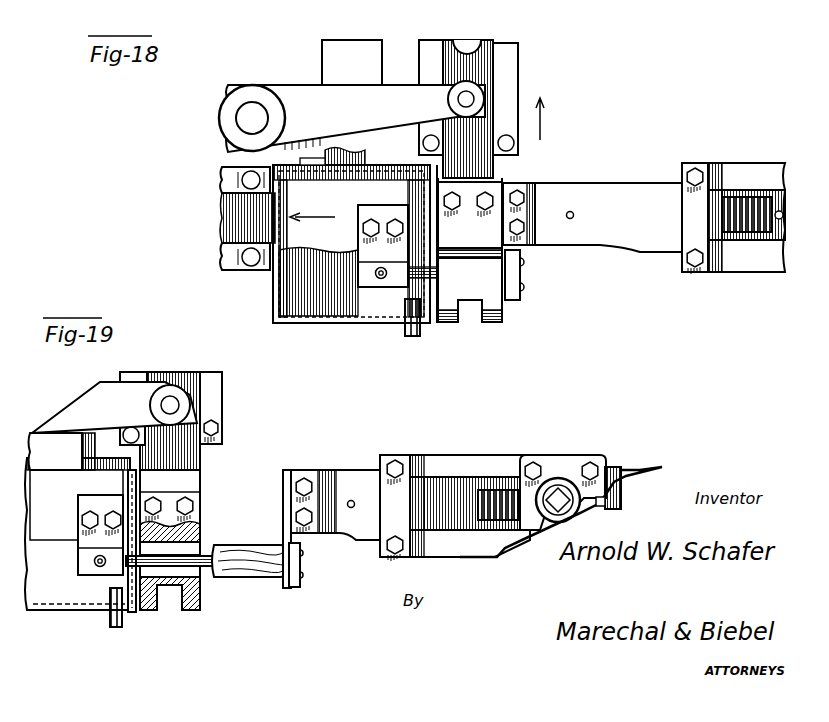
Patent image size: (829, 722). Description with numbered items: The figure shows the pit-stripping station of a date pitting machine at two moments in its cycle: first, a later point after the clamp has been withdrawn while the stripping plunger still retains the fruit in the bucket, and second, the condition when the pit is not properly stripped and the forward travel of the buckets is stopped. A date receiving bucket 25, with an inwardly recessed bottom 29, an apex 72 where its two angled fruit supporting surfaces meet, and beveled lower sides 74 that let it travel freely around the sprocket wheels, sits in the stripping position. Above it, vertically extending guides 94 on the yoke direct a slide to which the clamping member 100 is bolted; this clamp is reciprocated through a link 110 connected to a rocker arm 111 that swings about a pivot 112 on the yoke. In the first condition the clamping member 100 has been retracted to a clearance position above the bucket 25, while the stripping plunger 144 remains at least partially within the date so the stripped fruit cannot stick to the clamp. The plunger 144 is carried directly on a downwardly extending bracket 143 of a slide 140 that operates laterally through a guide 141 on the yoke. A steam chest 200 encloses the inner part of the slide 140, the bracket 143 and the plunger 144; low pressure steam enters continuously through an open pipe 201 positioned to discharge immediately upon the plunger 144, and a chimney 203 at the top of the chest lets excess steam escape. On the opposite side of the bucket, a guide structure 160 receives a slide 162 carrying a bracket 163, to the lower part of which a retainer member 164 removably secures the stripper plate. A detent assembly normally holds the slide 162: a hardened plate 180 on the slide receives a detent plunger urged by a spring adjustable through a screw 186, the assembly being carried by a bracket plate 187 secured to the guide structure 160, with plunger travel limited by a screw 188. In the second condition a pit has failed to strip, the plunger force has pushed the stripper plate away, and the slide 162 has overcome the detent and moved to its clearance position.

In FIG. 18, the date receiving bucket 25 is at (490, 296).
In FIG. 19, the date receiving bucket 25 is at (150, 614).
In FIG. 18, the inwardly recessed bottom 29 is at (471, 308).
In FIG. 19, the inwardly recessed bottom 29 is at (168, 596).
In FIG. 19, the apex 72 is at (202, 580).
In FIG. 18, the beveled lower sides 74 is at (446, 324).
In FIG. 18, the vertically extending guides 94 is at (506, 56).
In FIG. 18, the clamping member 100 is at (488, 184).
In FIG. 19, the clamping member 100 is at (200, 525).
In FIG. 18, the link 110 is at (455, 62).
In FIG. 19, the link 110 is at (176, 378).
In FIG. 18, the rocker arm 111 is at (288, 86).
In FIG. 19, the rocker arm 111 is at (85, 412).
In FIG. 18, the pivot 112 is at (242, 124).
In FIG. 18, the slide 140 is at (222, 183).
In FIG. 18, the guide 141 is at (222, 256).
In FIG. 19, the bracket 143 is at (80, 545).
In FIG. 19, the stripping plunger 144 is at (203, 556).
In FIG. 18, the guide structure 160 is at (734, 167).
In FIG. 19, the guide structure 160 is at (436, 456).
In FIG. 18, the slide 162 is at (622, 186).
In FIG. 19, the slide 162 is at (341, 470).
In FIG. 18, the bracket 163 is at (532, 240).
In FIG. 19, the bracket 163 is at (284, 470).
In FIG. 18, the retainer member 164 is at (520, 276).
In FIG. 19, the retainer member 164 is at (292, 586).
In FIG. 18, the hardened plate 180 is at (776, 226).
In FIG. 19, the hardened plate 180 is at (612, 482).
In FIG. 19, the screw 186 is at (557, 492).
In FIG. 19, the bracket plate 187 is at (568, 458).
In FIG. 19, the screw 188 is at (606, 504).
In FIG. 18, the steam chest 200 is at (310, 322).
In FIG. 19, the steam chest 200 is at (66, 612).
In FIG. 18, the open pipe 201 is at (404, 330).
In FIG. 19, the open pipe 201 is at (106, 626).
In FIG. 18, the chimney 203 is at (343, 43).
In FIG. 19, the chimney 203 is at (50, 440).